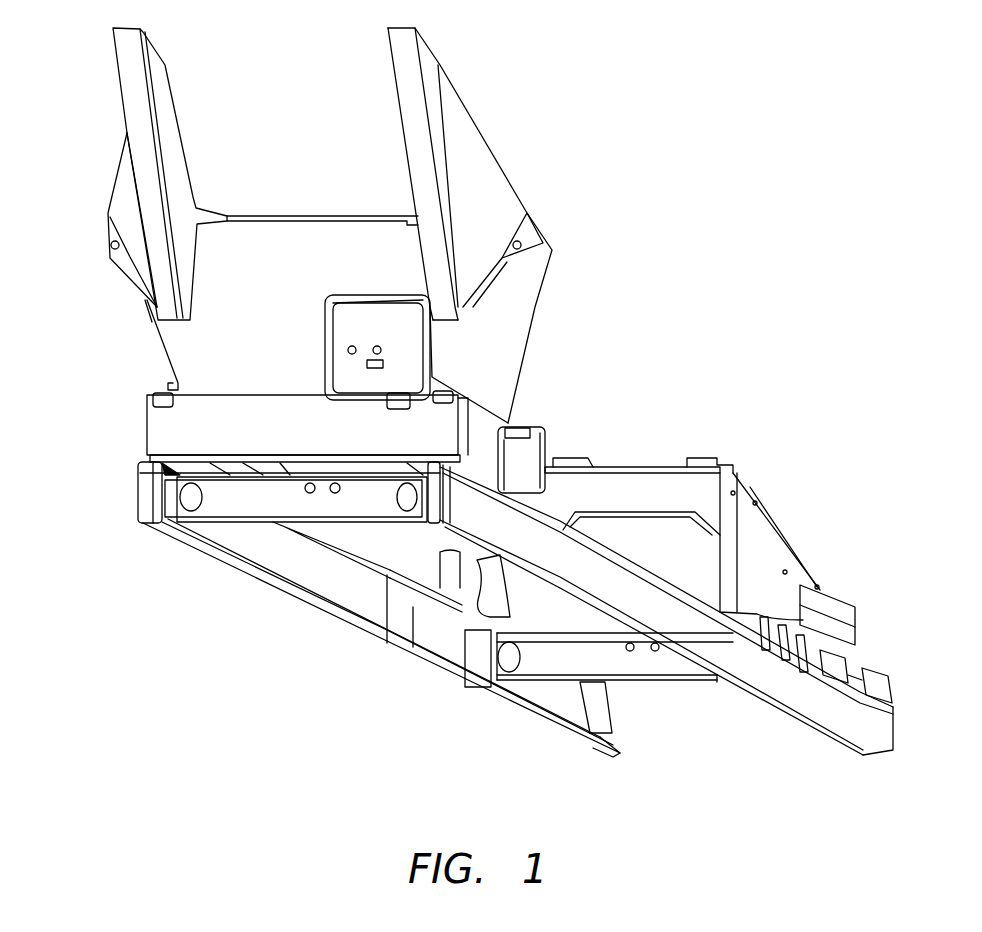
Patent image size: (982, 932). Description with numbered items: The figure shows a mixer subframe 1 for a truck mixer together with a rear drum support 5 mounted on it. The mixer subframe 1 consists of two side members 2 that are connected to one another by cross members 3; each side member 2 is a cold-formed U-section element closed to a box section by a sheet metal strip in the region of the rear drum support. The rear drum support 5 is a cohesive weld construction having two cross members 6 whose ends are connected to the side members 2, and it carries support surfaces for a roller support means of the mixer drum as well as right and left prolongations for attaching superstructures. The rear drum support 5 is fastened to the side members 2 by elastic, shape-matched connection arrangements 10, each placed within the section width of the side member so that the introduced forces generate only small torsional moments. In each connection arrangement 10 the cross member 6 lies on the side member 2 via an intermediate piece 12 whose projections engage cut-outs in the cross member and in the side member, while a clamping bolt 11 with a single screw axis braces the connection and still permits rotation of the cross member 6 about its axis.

The mixer subframe 1 is at (156, 606).
The side member 2 is at (447, 533).
The cross member 3 is at (640, 670).
The rear drum support 5 is at (130, 72).
The cross member 6 is at (170, 423).
The connection arrangement 10 is at (542, 398).
The clamping bolt 11 is at (168, 383).
The intermediate piece 12 is at (147, 458).